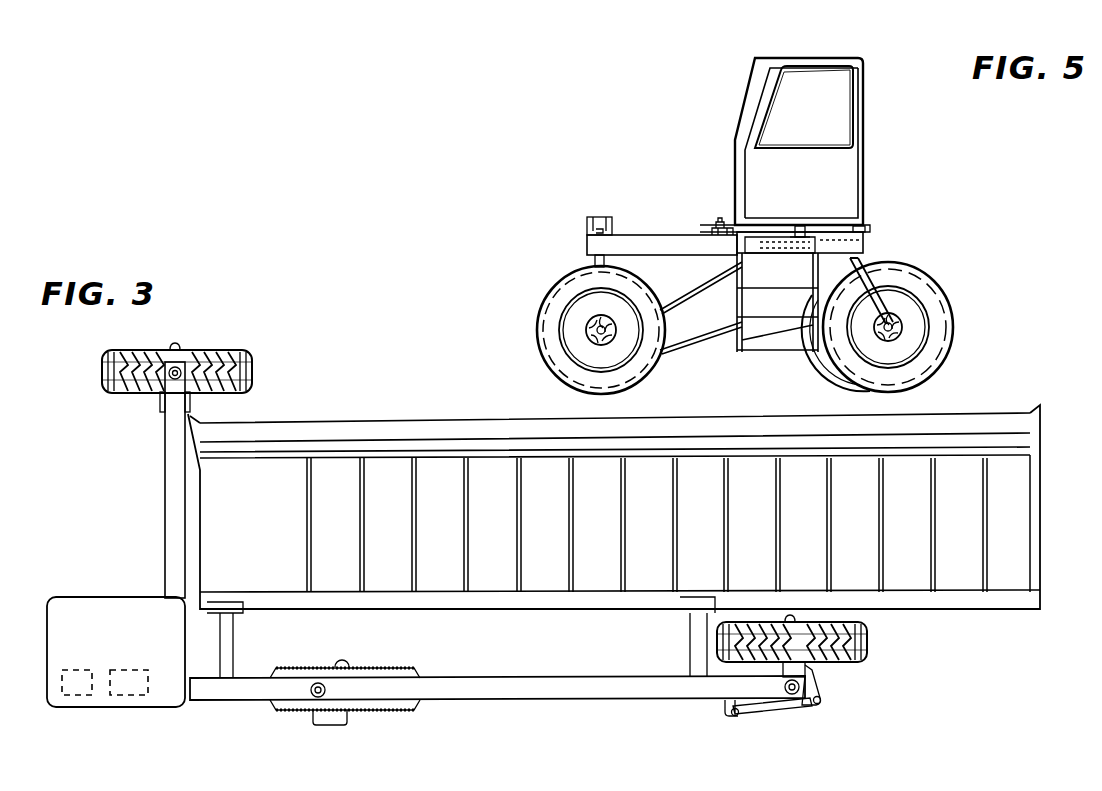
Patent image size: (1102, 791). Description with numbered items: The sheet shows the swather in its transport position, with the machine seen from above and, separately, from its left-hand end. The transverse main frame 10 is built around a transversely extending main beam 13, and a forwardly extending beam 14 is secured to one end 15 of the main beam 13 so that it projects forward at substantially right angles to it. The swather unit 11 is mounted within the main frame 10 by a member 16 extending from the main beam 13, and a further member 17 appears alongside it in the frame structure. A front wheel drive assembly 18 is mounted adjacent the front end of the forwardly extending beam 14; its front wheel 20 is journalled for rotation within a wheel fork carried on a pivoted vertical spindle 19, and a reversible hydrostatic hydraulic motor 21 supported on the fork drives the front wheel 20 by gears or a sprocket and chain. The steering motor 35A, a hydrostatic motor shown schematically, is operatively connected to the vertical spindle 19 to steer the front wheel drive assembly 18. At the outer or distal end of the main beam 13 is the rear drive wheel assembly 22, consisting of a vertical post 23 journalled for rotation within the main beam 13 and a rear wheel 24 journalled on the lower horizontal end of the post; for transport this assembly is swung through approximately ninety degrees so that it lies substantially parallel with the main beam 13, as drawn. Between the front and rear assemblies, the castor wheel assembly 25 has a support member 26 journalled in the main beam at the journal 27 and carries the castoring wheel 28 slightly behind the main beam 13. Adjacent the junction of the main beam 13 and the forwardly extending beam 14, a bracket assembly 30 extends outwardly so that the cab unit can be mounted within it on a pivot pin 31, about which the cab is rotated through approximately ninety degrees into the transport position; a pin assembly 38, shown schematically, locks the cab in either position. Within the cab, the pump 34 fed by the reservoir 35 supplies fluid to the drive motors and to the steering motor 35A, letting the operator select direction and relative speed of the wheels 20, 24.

In FIG. 5, the main frame 10 is at (876, 243).
In FIG. 3, the swather unit 11 is at (379, 424).
In FIG. 3, the main beam 13 is at (478, 686).
In FIG. 5, the forwardly extending beam 14 is at (655, 242).
In FIG. 3, the forwardly extending beam 14 is at (165, 502).
In FIG. 5, the end of the main beam 15 is at (863, 248).
In FIG. 5, the member 16 is at (692, 290).
In FIG. 5, the lower strut 17 is at (696, 336).
In FIG. 5, the front wheel drive assembly 18 is at (577, 330).
In FIG. 3, the front wheel drive assembly 18 is at (191, 375).
In FIG. 5, the vertical spindle 19 is at (596, 262).
In FIG. 3, the vertical spindle 19 is at (170, 380).
In FIG. 5, the front wheel 20 is at (541, 350).
In FIG. 3, the front wheel 20 is at (106, 390).
In FIG. 3, the hydraulic motor 21 is at (191, 400).
In FIG. 3, the rear drive wheel assembly 22 is at (822, 665).
In FIG. 3, the vertical post 23 is at (785, 688).
In FIG. 3, the rear wheel 24 is at (868, 636).
In FIG. 5, the castor wheel assembly 25 is at (893, 327).
In FIG. 5, the support member 26 is at (870, 276).
In FIG. 5, the journal 27 is at (866, 228).
In FIG. 5, the castoring wheel 28 is at (944, 340).
In FIG. 5, the bracket assembly 30 is at (775, 242).
In FIG. 5, the pivot pin 31 is at (800, 227).
In FIG. 3, the pump 34 is at (82, 670).
In FIG. 3, the reservoir 35 is at (144, 670).
In FIG. 5, the steering motor 35A is at (599, 218).
In FIG. 5, the pin assembly 38 is at (718, 220).